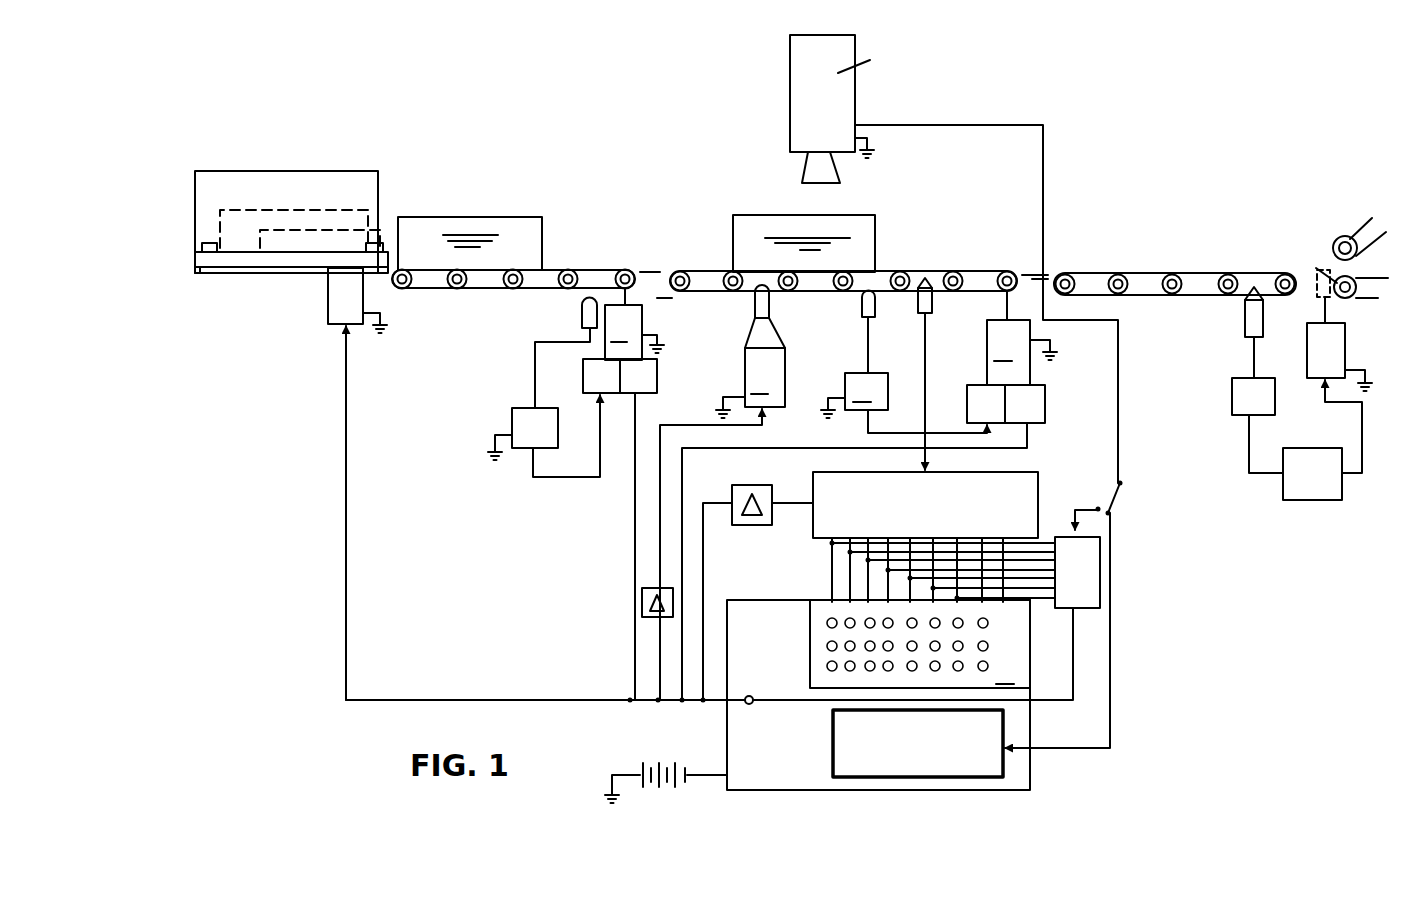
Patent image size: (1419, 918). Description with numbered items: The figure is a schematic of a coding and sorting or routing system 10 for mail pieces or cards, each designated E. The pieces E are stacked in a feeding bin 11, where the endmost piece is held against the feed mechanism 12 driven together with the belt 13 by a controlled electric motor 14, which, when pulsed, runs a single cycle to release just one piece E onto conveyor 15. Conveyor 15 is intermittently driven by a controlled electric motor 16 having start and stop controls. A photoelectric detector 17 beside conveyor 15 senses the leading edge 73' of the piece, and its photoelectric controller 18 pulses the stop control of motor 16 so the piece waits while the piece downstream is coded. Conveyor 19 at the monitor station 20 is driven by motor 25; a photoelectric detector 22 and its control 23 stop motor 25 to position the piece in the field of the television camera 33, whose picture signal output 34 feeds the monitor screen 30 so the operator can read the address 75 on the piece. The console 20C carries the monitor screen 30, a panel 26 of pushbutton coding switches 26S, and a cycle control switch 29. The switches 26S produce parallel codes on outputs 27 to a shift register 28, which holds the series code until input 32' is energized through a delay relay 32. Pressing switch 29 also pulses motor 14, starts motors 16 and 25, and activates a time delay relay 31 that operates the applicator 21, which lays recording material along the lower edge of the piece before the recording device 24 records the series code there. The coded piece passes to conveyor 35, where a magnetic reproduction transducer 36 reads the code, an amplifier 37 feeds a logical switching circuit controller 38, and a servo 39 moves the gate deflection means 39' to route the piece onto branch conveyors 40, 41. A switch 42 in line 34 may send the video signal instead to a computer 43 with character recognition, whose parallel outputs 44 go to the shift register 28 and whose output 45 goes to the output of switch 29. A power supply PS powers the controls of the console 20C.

The coding and sorting or routing system 10 is at (222, 150).
The feeding bin 11 is at (262, 185).
The feed mechanism 12 is at (272, 272).
The belt 13 is at (195, 273).
The controlled electric motor 14 is at (323, 317).
The conveyor 15 is at (480, 290).
The controlled electric motor 16 is at (623, 494).
The photoelectric detector 17 is at (580, 313).
The photoelectric controller 18 is at (512, 411).
The conveyor 19 is at (700, 268).
The monitor station 20 is at (1124, 700).
The console 20C is at (1028, 775).
The applicator 21 is at (722, 492).
The photoelectric detector 22 is at (870, 313).
The control 23 is at (904, 403).
The recording device 24 is at (930, 312).
The motor 25 is at (869, 495).
The panel 26 is at (920, 644).
The pushbutton coding switches 26S is at (827, 622).
The outputs 27 is at (830, 573).
The shift register 28 is at (1028, 503).
The cycle control switch 29 is at (752, 693).
The monitor screen 30 is at (833, 747).
The time delay relay 31 is at (638, 598).
The delay relay 32 is at (742, 592).
The input line to shift register 32' is at (791, 481).
The television camera 33 is at (798, 85).
The picture signal output 34 is at (1043, 170).
The conveyor 35 is at (1165, 272).
The magnetic reproduction transducer 36 is at (1243, 312).
The amplifier 37 is at (1243, 390).
The logical switching circuit controller 38 is at (1303, 492).
The servo 39 is at (1342, 344).
The gate deflection means 39' is at (1300, 307).
The branch conveyor 40 is at (1345, 237).
The branch conveyor 41 is at (1316, 268).
The switch 42 is at (1123, 500).
The computer 43 is at (1100, 557).
The parallel outputs 44 is at (1040, 598).
The output 45 is at (1077, 638).
The container 73' is at (562, 234).
The address 75 is at (783, 238).
The mail piece E is at (355, 222).
The power supply PS is at (662, 764).